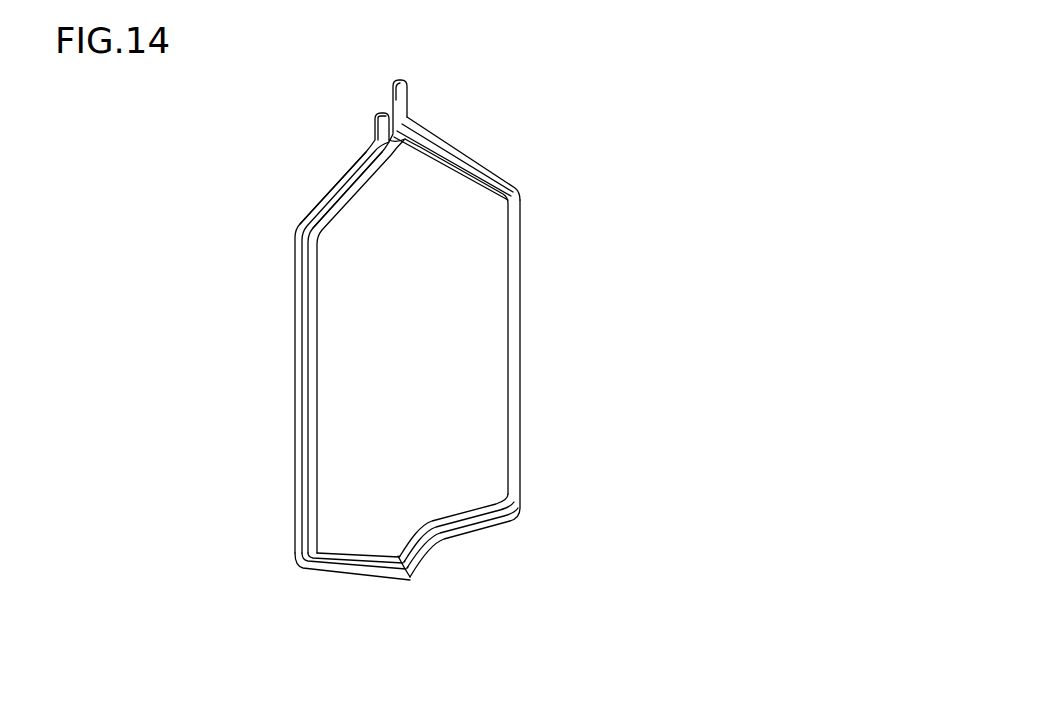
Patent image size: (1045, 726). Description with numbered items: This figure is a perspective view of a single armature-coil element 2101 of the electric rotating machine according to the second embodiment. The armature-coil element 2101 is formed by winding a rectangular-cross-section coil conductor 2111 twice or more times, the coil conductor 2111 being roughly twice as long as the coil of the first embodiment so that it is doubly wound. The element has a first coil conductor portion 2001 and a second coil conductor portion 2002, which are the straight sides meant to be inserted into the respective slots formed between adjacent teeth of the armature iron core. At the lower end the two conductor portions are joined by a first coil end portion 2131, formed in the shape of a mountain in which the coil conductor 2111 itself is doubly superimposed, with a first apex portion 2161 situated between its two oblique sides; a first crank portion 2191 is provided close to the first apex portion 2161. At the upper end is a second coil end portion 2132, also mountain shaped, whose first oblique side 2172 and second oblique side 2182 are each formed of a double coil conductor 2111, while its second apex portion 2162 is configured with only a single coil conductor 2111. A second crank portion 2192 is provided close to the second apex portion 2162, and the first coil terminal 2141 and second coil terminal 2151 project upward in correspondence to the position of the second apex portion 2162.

The armature-coil element 2101 is at (420, 348).
The first coil conductor portion 2001 is at (295, 258).
The second coil conductor portion 2002 is at (520, 363).
The coil conductor 2111 is at (296, 326).
The first coil end portion 2131 is at (440, 547).
The second coil end portion 2132 is at (471, 146).
The first coil terminal 2141 is at (403, 96).
The second coil terminal 2151 is at (375, 135).
The first apex portion 2161 is at (400, 583).
The second apex portion 2162 is at (410, 124).
The first oblique side 2172 is at (328, 196).
The second oblique side 2182 is at (458, 167).
The first crank portion 2191 is at (392, 557).
The second crank portion 2192 is at (416, 149).